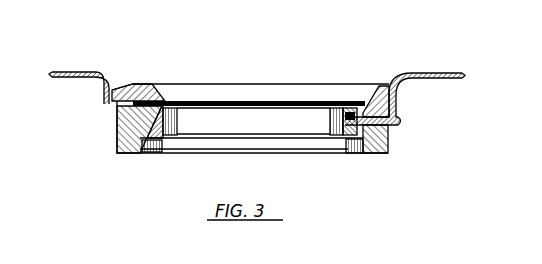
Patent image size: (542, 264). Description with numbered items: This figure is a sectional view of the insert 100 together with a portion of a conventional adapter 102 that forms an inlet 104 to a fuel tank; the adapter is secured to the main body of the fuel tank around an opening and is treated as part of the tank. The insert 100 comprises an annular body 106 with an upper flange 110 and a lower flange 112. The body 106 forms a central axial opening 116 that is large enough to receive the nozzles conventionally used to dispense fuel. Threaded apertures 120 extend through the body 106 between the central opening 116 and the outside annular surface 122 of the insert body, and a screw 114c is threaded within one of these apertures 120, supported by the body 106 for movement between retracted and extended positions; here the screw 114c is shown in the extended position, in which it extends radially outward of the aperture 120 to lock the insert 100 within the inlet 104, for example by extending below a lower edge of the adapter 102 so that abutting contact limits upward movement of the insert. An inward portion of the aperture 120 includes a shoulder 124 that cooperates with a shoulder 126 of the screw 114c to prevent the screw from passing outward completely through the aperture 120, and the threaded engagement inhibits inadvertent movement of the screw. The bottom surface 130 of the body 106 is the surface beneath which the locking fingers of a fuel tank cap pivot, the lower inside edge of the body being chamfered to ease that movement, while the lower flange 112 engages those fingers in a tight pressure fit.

The insert 100 is at (153, 82).
The adapter 102 is at (82, 71).
The inlet 104 is at (116, 124).
The annular body 106 is at (163, 154).
The upper flange 110 is at (369, 86).
The lower flange 112 is at (140, 156).
The screw 114c is at (398, 122).
The central axial opening 116 is at (253, 121).
The threaded apertures 120 is at (387, 137).
The outside annular surface 122 is at (113, 142).
The shoulders 124 is at (357, 96).
The shoulders 126 is at (345, 138).
The bottom surface 130 is at (353, 141).